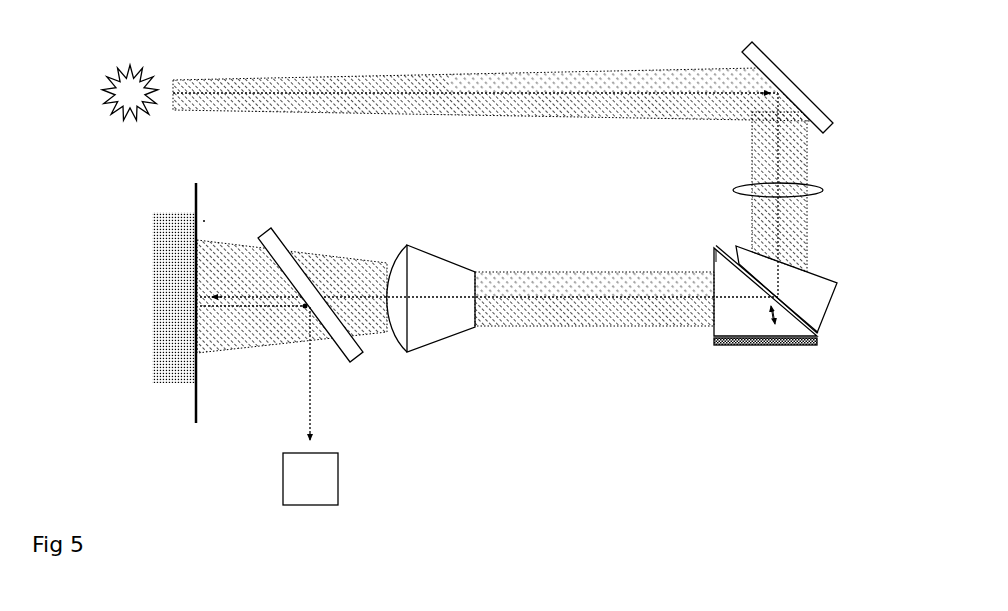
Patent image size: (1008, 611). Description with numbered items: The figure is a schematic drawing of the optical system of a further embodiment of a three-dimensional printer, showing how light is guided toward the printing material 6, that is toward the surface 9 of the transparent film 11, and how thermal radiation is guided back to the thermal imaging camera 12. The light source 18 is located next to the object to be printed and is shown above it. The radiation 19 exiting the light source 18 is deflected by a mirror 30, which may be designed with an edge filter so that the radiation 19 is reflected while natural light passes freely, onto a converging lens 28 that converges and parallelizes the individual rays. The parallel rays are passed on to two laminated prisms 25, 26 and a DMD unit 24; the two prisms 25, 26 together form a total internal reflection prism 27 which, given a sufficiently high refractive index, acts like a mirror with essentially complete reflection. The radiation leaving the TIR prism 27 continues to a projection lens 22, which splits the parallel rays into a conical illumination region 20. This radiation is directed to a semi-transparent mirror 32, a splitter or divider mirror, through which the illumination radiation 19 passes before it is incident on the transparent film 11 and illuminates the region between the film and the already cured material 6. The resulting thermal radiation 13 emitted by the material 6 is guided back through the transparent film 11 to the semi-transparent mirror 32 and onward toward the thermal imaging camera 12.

The printing material 6 is at (167, 290).
The surface 9 is at (206, 220).
The transparent film 11 is at (194, 197).
The thermal imaging camera 12 is at (293, 485).
The thermal radiation 13 is at (312, 407).
The light source 18 is at (108, 88).
The radiation 19 is at (392, 90).
The conical illumination region 20 is at (238, 333).
The projection lens 22 is at (433, 323).
The DMD unit 24 is at (740, 345).
The prism 25 is at (790, 330).
The prism 26 is at (812, 300).
The TIR prism 27 is at (742, 249).
The converging lens 28 is at (822, 188).
The mirror 30 is at (802, 102).
The semi-transparent mirror 32 is at (348, 358).